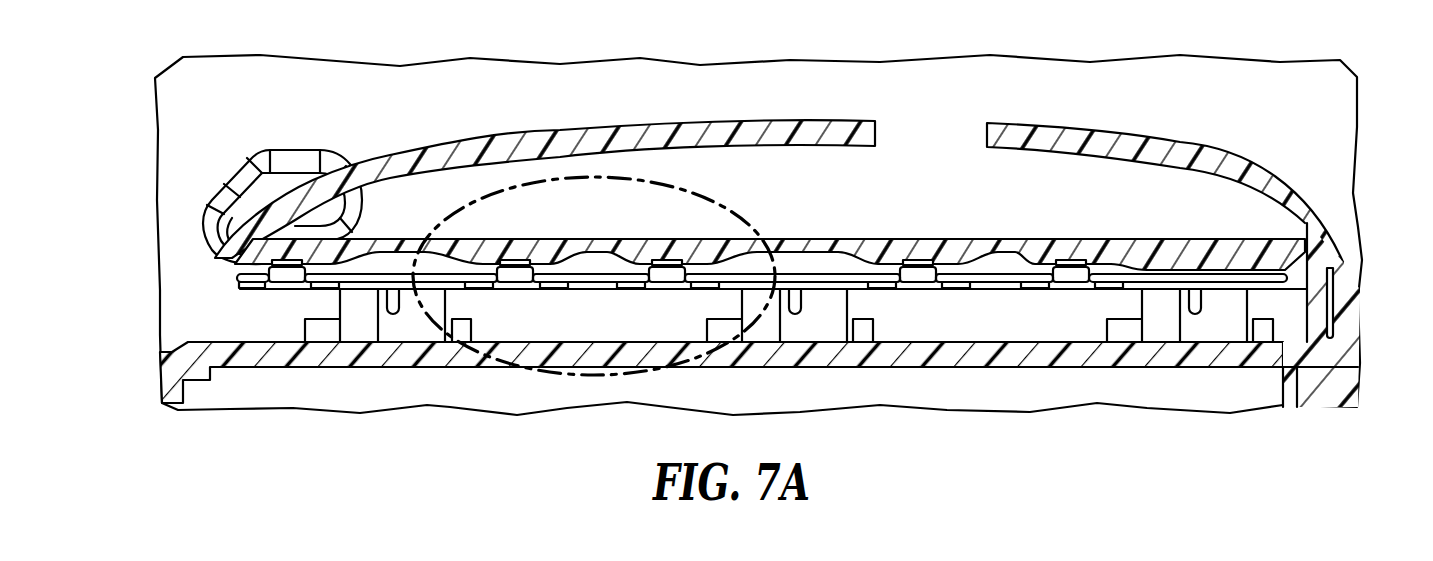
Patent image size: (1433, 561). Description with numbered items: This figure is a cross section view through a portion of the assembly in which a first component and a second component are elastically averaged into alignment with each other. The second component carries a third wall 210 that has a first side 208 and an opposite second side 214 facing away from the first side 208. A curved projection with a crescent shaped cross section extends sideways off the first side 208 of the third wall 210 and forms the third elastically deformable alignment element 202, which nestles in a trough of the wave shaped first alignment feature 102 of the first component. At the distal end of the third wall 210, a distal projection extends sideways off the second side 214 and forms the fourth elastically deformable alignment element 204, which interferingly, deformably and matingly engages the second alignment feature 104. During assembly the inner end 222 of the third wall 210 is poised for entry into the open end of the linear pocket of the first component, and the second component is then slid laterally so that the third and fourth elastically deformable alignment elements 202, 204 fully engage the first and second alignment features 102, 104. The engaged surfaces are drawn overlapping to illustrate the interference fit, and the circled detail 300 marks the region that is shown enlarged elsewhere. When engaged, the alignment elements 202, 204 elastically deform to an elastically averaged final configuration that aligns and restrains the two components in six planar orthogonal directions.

The first alignment feature 102 is at (303, 327).
The second alignment feature 104 is at (548, 283).
The third elastically deformable alignment element 202 is at (340, 298).
The fourth elastically deformable alignment element 204 is at (919, 273).
The first side 208 is at (520, 289).
The third wall 210 is at (1268, 288).
The second side 214 is at (1197, 273).
The inner end 222 is at (1326, 268).
The detail 300 is at (667, 183).